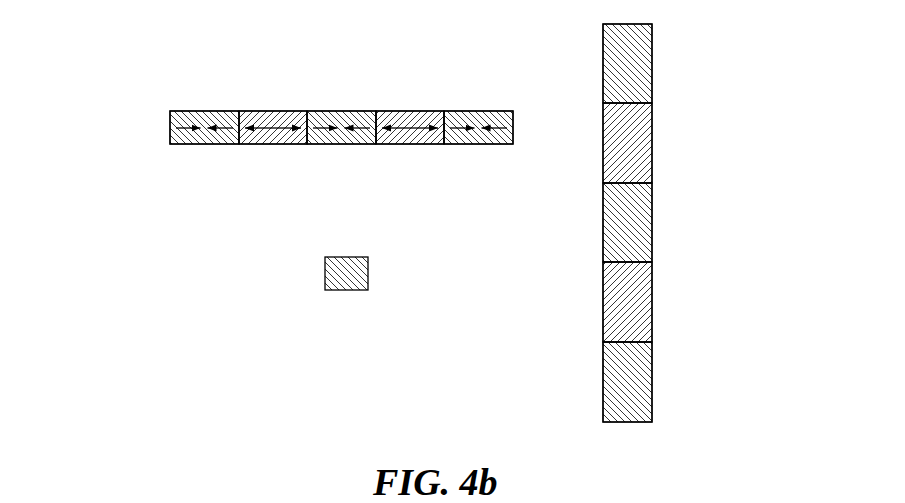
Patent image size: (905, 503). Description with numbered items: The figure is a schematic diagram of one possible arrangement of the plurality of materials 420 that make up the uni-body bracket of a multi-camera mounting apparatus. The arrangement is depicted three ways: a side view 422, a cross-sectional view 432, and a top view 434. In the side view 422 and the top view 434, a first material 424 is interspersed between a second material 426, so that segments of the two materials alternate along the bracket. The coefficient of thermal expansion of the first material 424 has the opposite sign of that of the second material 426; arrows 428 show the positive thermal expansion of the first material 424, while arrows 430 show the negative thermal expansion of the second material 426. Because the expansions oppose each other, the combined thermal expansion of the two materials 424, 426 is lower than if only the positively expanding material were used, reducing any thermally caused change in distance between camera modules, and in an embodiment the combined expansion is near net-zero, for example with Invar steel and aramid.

The plurality of materials 420 is at (123, 352).
The side view of the arrangement 422 is at (145, 125).
The first material 424 is at (270, 110).
The second material 426 is at (203, 146).
The arrows 428 is at (272, 133).
The arrows 430 is at (182, 111).
The cross-sectional view of the arrangement 432 is at (323, 272).
The top view of the arrangement 434 is at (760, 158).